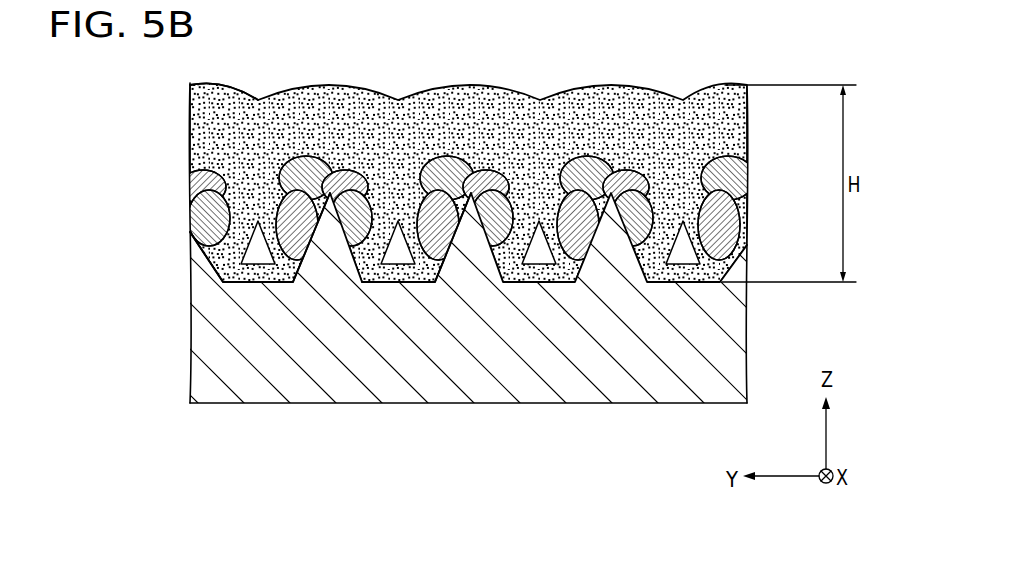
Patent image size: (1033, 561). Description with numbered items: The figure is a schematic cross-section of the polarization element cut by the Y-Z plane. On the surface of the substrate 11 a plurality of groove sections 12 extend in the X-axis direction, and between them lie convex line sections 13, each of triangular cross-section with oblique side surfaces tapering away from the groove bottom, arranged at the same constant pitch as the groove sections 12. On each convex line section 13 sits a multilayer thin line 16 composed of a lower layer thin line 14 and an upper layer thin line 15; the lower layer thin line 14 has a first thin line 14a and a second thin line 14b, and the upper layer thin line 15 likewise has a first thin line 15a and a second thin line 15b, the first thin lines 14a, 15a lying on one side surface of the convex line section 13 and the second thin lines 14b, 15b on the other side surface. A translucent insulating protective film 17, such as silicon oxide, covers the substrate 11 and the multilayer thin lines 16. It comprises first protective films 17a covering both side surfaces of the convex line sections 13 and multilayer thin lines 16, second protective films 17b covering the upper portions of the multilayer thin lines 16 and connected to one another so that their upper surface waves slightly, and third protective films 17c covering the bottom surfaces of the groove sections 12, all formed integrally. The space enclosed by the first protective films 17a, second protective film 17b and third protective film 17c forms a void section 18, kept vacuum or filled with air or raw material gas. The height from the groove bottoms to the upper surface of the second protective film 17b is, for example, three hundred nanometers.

The substrate 11 is at (735, 358).
The groove section 12 is at (540, 264).
The convex line section 13 is at (327, 263).
The lower layer thin line 14 is at (532, 133).
The first thin line 14a is at (376, 200).
The second thin line 14b is at (310, 180).
The upper layer thin line 15 is at (603, 133).
The first thin line 15a is at (493, 182).
The second thin line 15b is at (453, 162).
The multilayer thin line 16 is at (792, 160).
The protective film 17 is at (209, 182).
The first protective film 17a is at (233, 190).
The second protective film 17b is at (332, 98).
The third protective film 17c is at (213, 250).
The void section 18 is at (408, 284).